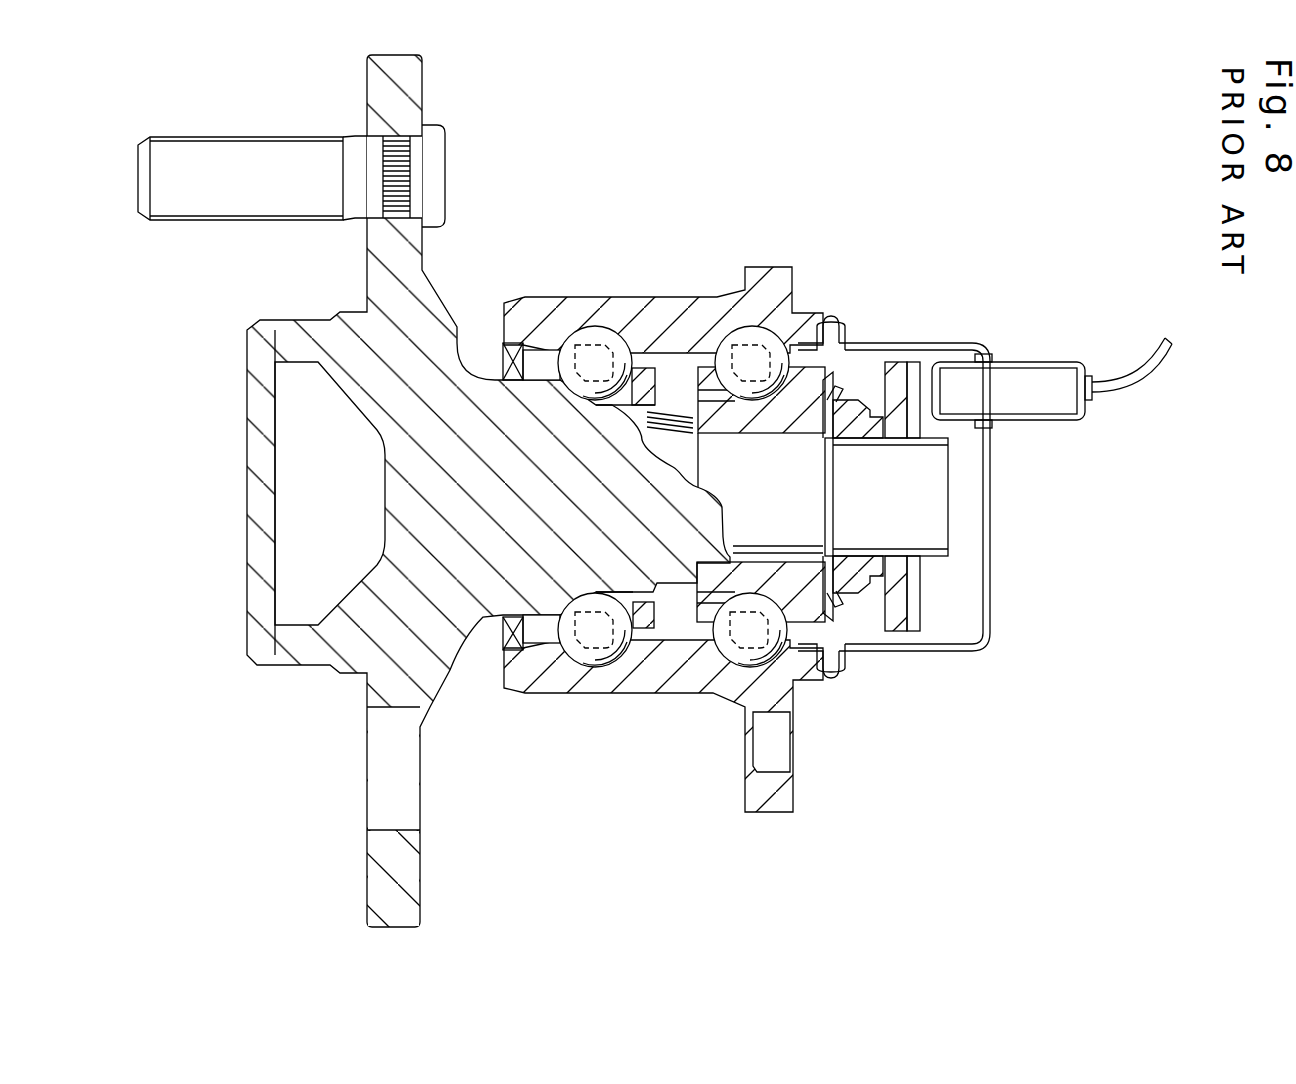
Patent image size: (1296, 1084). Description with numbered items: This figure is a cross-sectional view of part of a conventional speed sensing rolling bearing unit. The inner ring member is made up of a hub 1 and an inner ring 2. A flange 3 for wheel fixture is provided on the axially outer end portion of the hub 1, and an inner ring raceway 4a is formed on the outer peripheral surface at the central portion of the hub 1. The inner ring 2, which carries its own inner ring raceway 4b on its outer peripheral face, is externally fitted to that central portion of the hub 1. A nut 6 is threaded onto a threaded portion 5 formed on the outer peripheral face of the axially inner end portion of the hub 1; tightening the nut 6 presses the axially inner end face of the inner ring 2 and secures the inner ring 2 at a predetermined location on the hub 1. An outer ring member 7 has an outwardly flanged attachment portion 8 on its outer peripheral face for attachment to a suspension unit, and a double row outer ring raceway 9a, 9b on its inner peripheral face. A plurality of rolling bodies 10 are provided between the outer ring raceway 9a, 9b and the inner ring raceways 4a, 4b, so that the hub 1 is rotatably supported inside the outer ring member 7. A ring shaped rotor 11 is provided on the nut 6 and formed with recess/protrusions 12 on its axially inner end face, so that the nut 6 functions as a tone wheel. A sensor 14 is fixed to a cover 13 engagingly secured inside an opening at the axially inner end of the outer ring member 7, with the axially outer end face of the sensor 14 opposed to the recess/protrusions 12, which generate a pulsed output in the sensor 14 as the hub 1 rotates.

The hub 1 is at (405, 492).
The inner ring 2 is at (850, 662).
The flange 3 is at (413, 886).
The inner ring raceway 4a is at (510, 659).
The inner ring raceway 4b is at (790, 660).
The threaded portion 5 is at (930, 482).
The nut 6 is at (852, 415).
The outer ring member 7 is at (626, 305).
The attachment portion 8 is at (768, 806).
The outer ring raceway 9a is at (578, 662).
The outer ring raceway 9b is at (735, 662).
The rolling bodies 10 is at (585, 340).
The rotor 11 is at (890, 622).
The recess/protrusions 12 is at (920, 588).
The cover 13 is at (922, 345).
The sensor 14 is at (1037, 370).